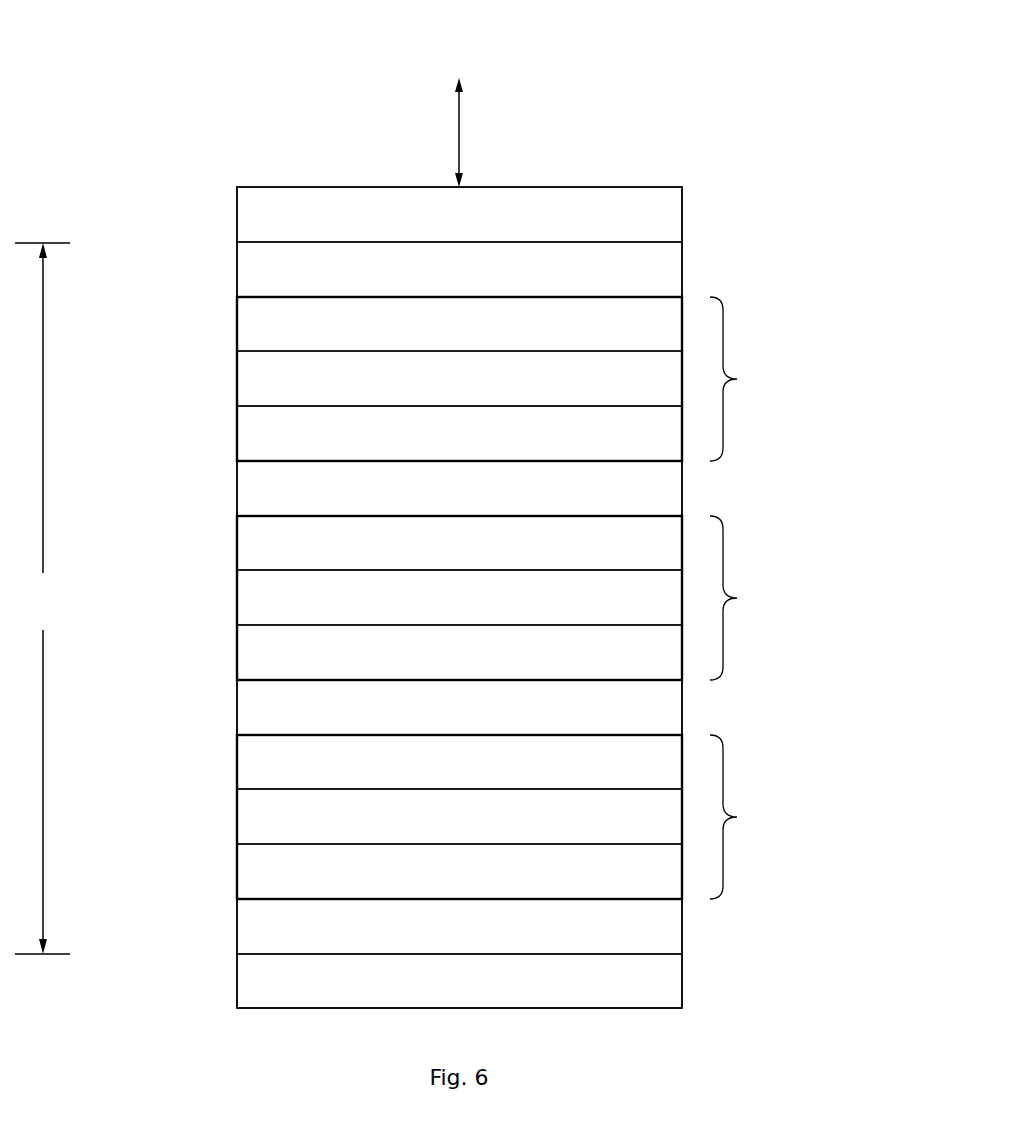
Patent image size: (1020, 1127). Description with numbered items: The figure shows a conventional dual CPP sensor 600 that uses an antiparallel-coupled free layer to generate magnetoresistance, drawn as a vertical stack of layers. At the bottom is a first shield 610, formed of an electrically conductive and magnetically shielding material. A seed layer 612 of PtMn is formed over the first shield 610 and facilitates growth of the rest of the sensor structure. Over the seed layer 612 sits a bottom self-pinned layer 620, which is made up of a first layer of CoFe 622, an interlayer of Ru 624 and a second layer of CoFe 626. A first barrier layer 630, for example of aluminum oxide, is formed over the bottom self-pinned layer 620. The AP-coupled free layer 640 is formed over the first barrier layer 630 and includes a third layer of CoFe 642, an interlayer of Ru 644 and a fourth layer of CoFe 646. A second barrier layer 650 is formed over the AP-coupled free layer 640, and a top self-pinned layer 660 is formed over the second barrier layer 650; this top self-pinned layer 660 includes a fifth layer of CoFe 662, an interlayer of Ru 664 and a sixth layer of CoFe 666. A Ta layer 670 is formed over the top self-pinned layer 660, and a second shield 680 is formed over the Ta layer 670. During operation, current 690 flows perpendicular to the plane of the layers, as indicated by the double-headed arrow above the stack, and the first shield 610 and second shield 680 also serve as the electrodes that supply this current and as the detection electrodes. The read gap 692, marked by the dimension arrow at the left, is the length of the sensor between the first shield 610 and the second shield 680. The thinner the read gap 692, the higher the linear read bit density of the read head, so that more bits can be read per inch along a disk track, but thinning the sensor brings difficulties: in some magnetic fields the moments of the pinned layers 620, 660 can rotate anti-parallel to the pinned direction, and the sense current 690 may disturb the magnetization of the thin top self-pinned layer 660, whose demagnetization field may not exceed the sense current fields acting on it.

The dual CPP sensor 600 is at (200, 110).
The first shield 610 is at (672, 990).
The seed layer 612 is at (775, 912).
The bottom self-pinned layer 620 is at (803, 795).
The first layer of CoFe 622 is at (249, 874).
The interlayer of Ru 624 is at (249, 819).
The second layer of CoFe 626 is at (249, 765).
The first barrier layer 630 is at (660, 713).
The AP-coupled free layer 640 is at (815, 570).
The third layer of CoFe 642 is at (249, 655).
The interlayer of Ru 644 is at (249, 600).
The fourth layer of CoFe 646 is at (249, 546).
The second barrier layer 650 is at (670, 487).
The top self-pinned layer 660 is at (815, 363).
The fifth layer of CoFe 662 is at (249, 436).
The interlayer of Ru 664 is at (249, 381).
The sixth layer of CoFe 666 is at (249, 327).
The Ta layer 670 is at (670, 267).
The second shield 680 is at (670, 203).
The current 690 is at (459, 130).
The read gap 692 is at (67, 603).